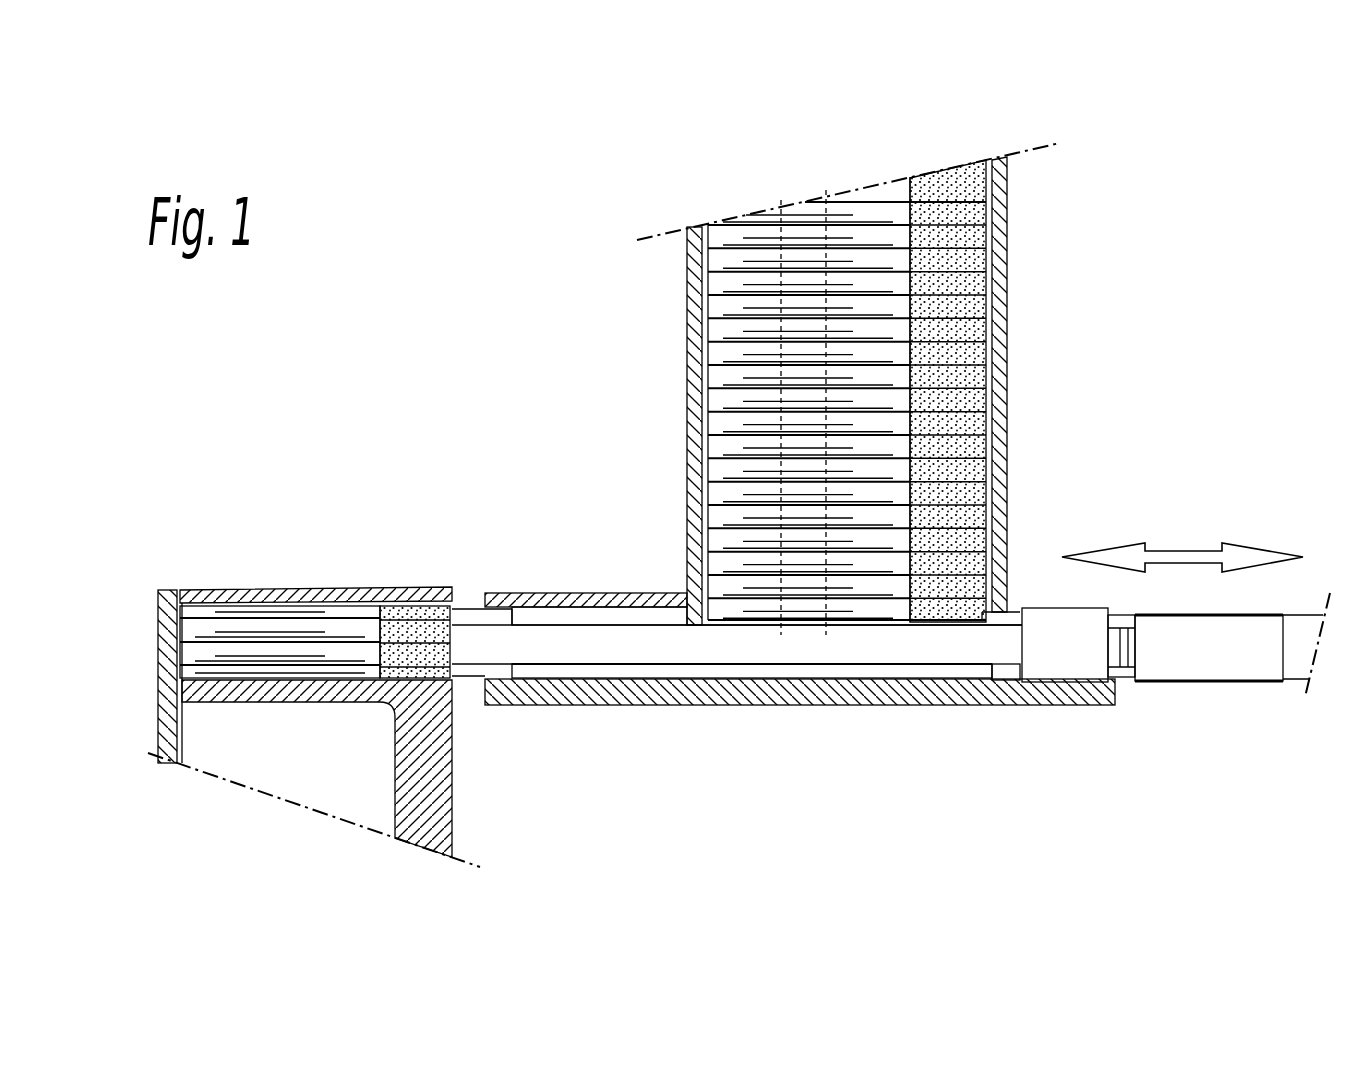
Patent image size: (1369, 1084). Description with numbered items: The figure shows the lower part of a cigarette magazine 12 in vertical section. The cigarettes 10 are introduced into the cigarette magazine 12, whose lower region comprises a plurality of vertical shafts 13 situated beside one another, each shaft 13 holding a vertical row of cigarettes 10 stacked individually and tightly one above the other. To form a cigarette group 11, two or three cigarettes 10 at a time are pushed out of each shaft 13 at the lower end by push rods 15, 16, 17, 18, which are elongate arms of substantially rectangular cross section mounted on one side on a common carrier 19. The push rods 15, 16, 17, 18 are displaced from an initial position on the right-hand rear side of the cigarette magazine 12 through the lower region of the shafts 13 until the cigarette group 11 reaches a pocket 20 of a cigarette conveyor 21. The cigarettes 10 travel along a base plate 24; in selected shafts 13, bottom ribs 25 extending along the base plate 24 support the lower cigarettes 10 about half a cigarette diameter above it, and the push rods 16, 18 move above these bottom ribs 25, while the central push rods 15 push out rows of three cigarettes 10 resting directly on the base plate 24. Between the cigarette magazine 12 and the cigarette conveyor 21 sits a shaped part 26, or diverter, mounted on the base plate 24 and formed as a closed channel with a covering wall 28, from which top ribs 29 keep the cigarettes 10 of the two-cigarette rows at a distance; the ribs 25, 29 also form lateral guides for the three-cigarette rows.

The cigarettes 10 is at (840, 278).
The cigarette group 11 is at (321, 588).
The cigarette magazine 12 is at (600, 442).
The vertical shafts 13 is at (988, 398).
The push rods 15 is at (793, 737).
The push rods 16 is at (793, 737).
The push rods 17 is at (793, 737).
The push rods 18 is at (868, 650).
The common carrier 19 is at (1248, 632).
The pocket 20 is at (219, 580).
The cigarette conveyor 21 is at (305, 630).
The base plate 24 is at (678, 697).
The bottom ribs 25 is at (542, 670).
The shaped part 26 is at (798, 640).
The covering wall 28 is at (579, 535).
The top ribs 29 is at (500, 592).